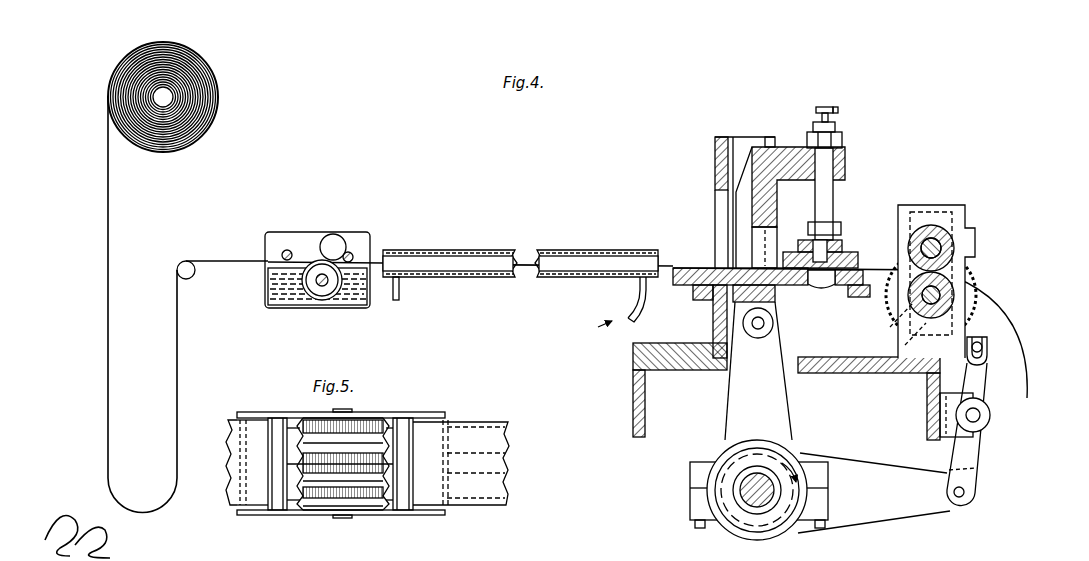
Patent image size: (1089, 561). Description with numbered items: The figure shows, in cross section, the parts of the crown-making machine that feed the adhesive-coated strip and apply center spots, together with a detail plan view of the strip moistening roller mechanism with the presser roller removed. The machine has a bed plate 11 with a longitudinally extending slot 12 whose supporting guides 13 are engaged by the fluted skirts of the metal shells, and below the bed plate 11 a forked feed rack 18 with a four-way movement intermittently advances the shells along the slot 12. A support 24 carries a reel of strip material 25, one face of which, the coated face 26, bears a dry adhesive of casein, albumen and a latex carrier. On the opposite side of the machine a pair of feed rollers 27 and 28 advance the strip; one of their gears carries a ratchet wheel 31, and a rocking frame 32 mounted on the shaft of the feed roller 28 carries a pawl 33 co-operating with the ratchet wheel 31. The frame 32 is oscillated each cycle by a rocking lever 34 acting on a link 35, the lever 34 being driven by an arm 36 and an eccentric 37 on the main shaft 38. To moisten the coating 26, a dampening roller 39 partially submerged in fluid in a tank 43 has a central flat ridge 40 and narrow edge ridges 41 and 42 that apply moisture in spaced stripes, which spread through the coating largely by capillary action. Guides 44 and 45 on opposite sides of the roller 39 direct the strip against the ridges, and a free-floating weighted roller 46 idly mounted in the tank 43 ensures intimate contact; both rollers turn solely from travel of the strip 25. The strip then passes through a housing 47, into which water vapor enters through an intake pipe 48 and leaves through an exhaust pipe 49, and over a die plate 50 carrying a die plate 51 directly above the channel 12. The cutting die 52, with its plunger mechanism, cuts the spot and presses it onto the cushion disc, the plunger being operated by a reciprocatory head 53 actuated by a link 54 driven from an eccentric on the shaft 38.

In FIG. 4, the bed plate 11 is at (706, 373).
In FIG. 4, the longitudinally extending slot 12 is at (819, 291).
In FIG. 4, the supporting guides 13 is at (848, 250).
In FIG. 4, the forked feed rack 18 is at (853, 286).
In FIG. 4, the support 24 is at (170, 96).
In FIG. 4, the strip material 25 is at (150, 226).
In FIG. 5, the strip material 25 is at (493, 467).
In FIG. 4, the coated face 26 is at (108, 178).
In FIG. 4, the feed roller 27 is at (950, 233).
In FIG. 4, the feed roller 28 is at (925, 333).
In FIG. 4, the ratchet wheel 31 is at (977, 298).
In FIG. 4, the rocking frame 32 is at (966, 206).
In FIG. 4, the pawl 33 is at (936, 230).
In FIG. 4, the rocking lever 34 is at (978, 388).
In FIG. 4, the link 35 is at (990, 346).
In FIG. 4, the arm 36 is at (900, 500).
In FIG. 4, the eccentric 37 is at (795, 505).
In FIG. 4, the main shaft 38 is at (742, 487).
In FIG. 4, the dampening roller 39 is at (326, 287).
In FIG. 5, the dampening roller 39 is at (333, 484).
In FIG. 5, the central flat ridge 40 is at (338, 463).
In FIG. 5, the edge ridge 41 is at (313, 423).
In FIG. 4, the edge ridge 42 is at (316, 299).
In FIG. 5, the edge ridge 42 is at (376, 511).
In FIG. 4, the tank 43 is at (270, 306).
In FIG. 5, the tank 43 is at (432, 517).
In FIG. 4, the guide 44 is at (289, 250).
In FIG. 5, the guide 44 is at (277, 475).
In FIG. 4, the guide 45 is at (352, 253).
In FIG. 5, the guide 45 is at (405, 445).
In FIG. 4, the weighted roller 46 is at (336, 240).
In FIG. 4, the housing 47 is at (456, 250).
In FIG. 4, the intake pipe 48 is at (630, 300).
In FIG. 4, the exhaust pipe 49 is at (400, 294).
In FIG. 4, the die plate 50 is at (715, 190).
In FIG. 4, the die plate 51 is at (802, 246).
In FIG. 4, the cutting die 52 is at (823, 167).
In FIG. 4, the reciprocatory head 53 is at (765, 165).
In FIG. 4, the link 54 is at (772, 402).